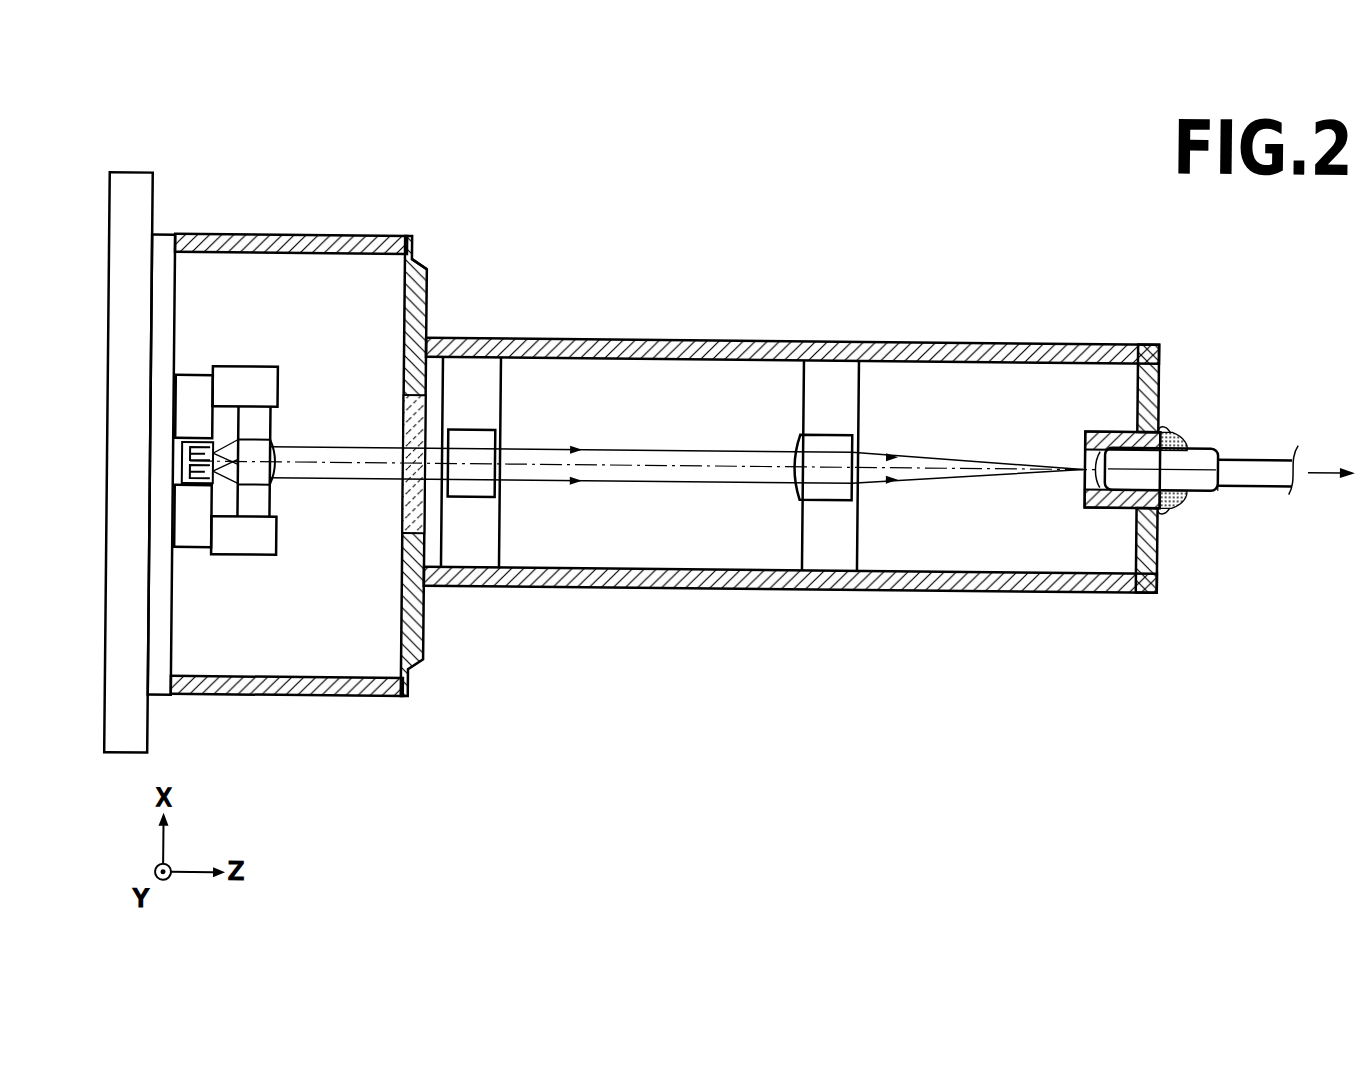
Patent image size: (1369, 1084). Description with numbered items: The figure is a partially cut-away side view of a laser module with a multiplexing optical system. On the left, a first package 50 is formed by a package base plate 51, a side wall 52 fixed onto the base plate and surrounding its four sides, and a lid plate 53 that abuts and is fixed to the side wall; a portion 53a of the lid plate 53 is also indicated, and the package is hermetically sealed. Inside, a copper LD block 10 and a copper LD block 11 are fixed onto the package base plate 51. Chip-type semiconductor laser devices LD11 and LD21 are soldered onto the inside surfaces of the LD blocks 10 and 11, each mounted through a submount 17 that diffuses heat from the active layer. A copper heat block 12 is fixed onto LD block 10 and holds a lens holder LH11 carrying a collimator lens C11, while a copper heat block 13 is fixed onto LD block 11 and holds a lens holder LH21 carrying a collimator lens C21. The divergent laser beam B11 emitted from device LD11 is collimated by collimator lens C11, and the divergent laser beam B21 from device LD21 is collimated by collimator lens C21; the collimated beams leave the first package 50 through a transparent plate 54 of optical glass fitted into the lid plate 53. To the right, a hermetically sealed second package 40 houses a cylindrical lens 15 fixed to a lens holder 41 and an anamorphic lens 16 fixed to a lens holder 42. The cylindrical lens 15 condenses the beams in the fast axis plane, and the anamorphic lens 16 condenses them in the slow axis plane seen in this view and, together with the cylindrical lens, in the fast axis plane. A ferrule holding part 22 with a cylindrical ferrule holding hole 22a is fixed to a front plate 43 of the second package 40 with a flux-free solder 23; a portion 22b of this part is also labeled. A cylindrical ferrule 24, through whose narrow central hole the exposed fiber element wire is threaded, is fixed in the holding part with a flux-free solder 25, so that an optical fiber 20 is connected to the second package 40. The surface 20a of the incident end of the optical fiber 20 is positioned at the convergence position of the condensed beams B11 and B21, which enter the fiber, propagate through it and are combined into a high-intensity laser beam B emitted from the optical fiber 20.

The LD block 10 is at (188, 392).
The LD block 11 is at (192, 535).
The heat block 12 is at (240, 382).
The heat block 13 is at (247, 545).
The cylindrical lens 15 is at (486, 416).
The anamorphic lens 16 is at (850, 416).
The submount 17 is at (182, 455).
The optical fiber 20 is at (1270, 432).
The surface of the incident end of the optical fiber 20a is at (1101, 463).
The ferrule holding part 22 is at (1102, 511).
The ferrule holding hole 22a is at (1082, 468).
The outer end of connector 22b is at (1212, 483).
The flux-free solder 23 is at (1162, 421).
The ferrule 24 is at (1207, 440).
The flux-free solder 25 is at (1173, 434).
The second package 40 is at (1047, 330).
The lens holder 41 is at (486, 556).
The lens holder 42 is at (850, 556).
The front plate 43 is at (1159, 576).
The first package 50 is at (385, 184).
The package base plate 51 is at (161, 245).
The side wall 52 is at (258, 246).
The lid plate 53 is at (427, 329).
The step portion of partition wall 53a is at (421, 262).
The transparent plate 54 is at (403, 420).
The semiconductor laser device LD11 is at (258, 452).
The semiconductor laser device LD21 is at (244, 488).
The lens holder LH11 is at (248, 416).
The lens holder LH21 is at (250, 510).
The collimator lens C11 is at (258, 475).
The collimator lens C21 is at (262, 468).
The laser beam B11 is at (766, 443).
The laser beam B21 is at (748, 480).
The high-intensity laser beam B is at (1323, 470).